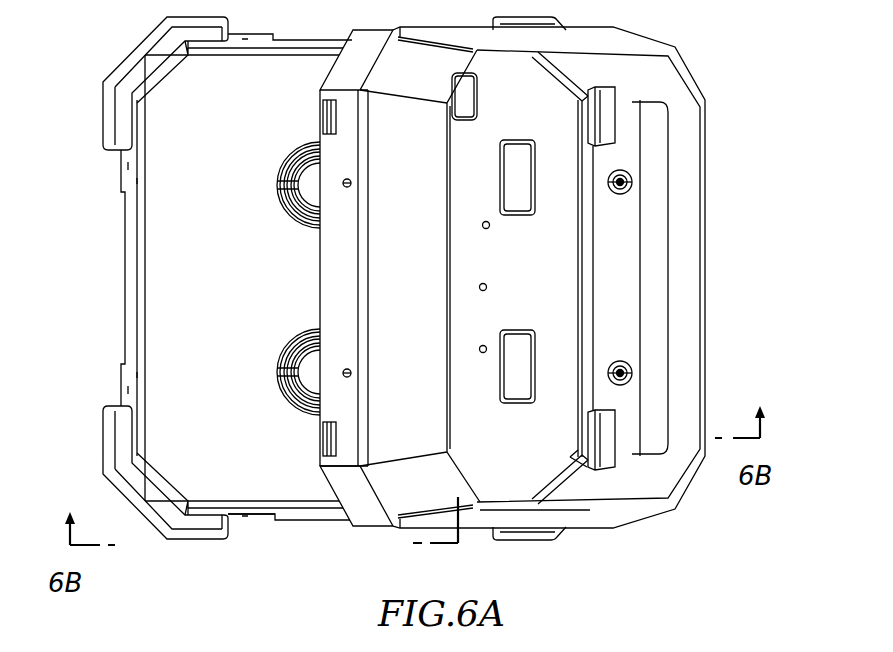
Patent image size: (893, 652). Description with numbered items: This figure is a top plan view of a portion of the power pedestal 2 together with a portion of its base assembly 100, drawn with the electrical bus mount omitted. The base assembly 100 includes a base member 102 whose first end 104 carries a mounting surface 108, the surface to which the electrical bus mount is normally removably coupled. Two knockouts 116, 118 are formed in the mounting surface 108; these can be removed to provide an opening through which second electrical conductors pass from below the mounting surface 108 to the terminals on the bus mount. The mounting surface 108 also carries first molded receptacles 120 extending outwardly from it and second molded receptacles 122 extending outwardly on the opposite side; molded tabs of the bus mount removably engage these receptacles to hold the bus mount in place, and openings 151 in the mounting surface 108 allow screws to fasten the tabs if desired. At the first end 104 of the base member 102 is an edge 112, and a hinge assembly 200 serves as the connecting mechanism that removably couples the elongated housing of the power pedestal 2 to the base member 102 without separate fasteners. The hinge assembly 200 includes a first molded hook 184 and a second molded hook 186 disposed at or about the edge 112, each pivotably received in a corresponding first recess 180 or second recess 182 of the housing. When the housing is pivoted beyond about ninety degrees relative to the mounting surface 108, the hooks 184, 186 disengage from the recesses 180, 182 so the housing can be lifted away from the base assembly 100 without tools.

The power pedestal 2 is at (260, 587).
The base assembly 100 is at (622, 556).
The base member 102 is at (121, 175).
The first end 104 is at (118, 385).
The mounting surface 108 is at (155, 263).
The edge 112 is at (587, 496).
The knockout 116 is at (298, 166).
The knockout 118 is at (298, 357).
The first molded receptacle 120 is at (465, 128).
The second molded receptacle 122 is at (500, 160).
The opening 151 is at (483, 283).
The first recess 180 is at (615, 443).
The second recess 182 is at (610, 107).
The first molded hook 184 is at (598, 433).
The second molded hook 186 is at (593, 135).
The hinge assembly 200 is at (668, 278).